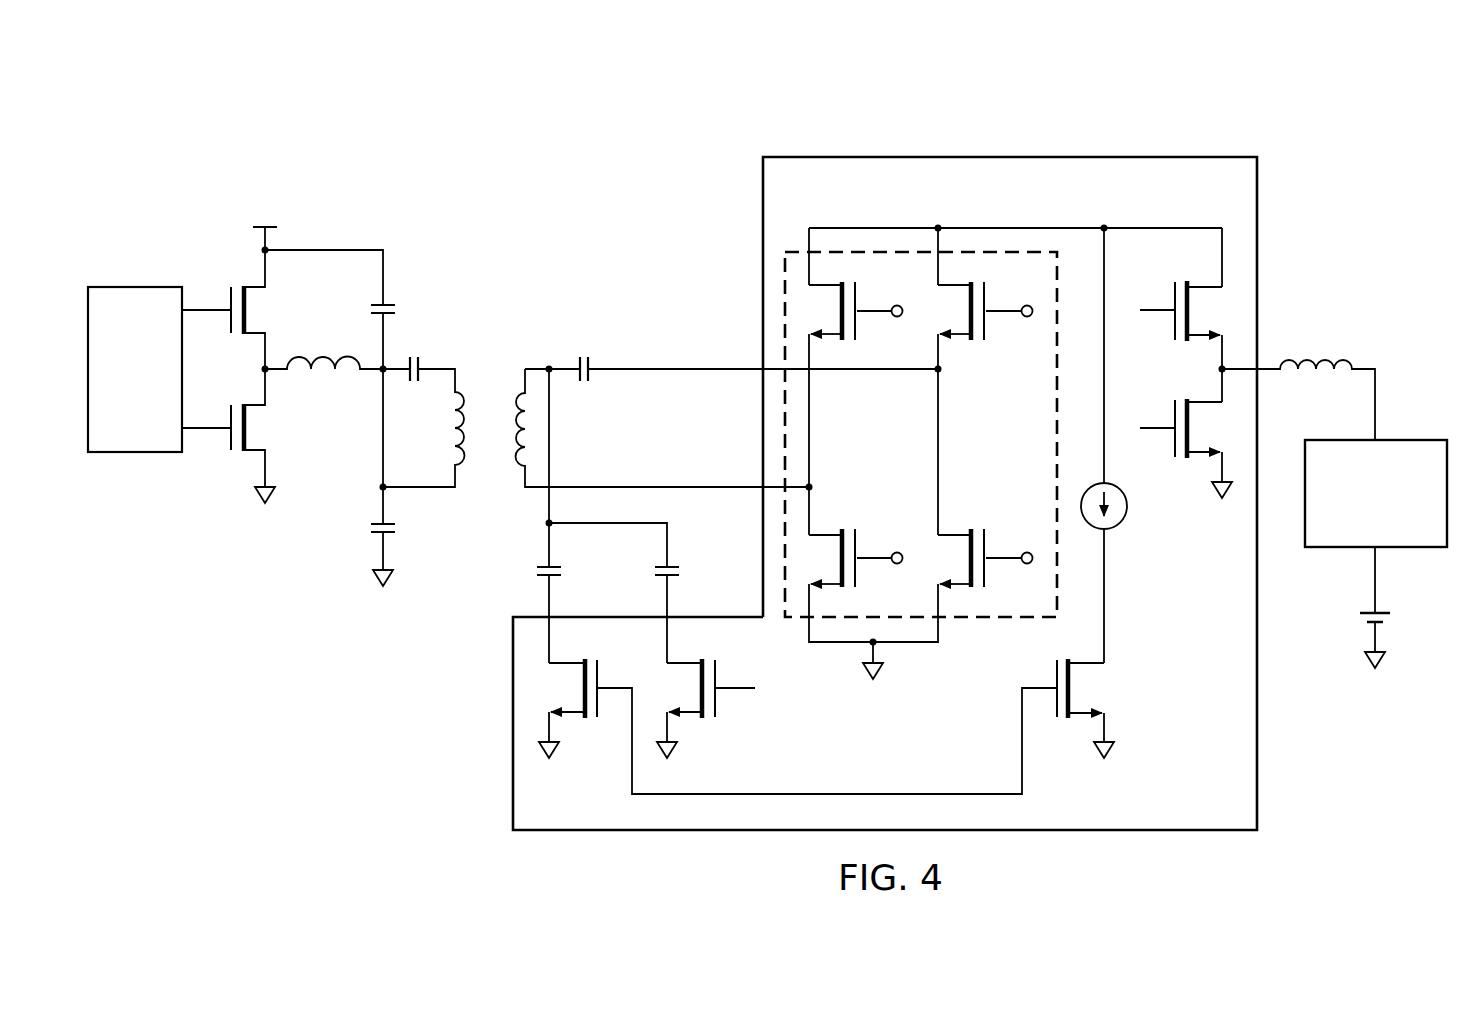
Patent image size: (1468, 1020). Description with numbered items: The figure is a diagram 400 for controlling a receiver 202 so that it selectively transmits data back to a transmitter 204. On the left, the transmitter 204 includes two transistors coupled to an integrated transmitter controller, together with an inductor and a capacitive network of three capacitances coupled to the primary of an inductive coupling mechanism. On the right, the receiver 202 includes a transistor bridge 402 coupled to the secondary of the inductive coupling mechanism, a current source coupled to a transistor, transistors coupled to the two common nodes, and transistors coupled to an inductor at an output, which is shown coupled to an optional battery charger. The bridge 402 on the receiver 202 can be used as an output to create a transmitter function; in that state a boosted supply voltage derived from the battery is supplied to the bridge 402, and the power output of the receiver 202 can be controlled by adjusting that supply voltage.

The diagram 400 is at (466, 118).
The transmitter 204 is at (316, 203).
The receiver 202 is at (1030, 151).
The bridge 402 is at (1020, 450).